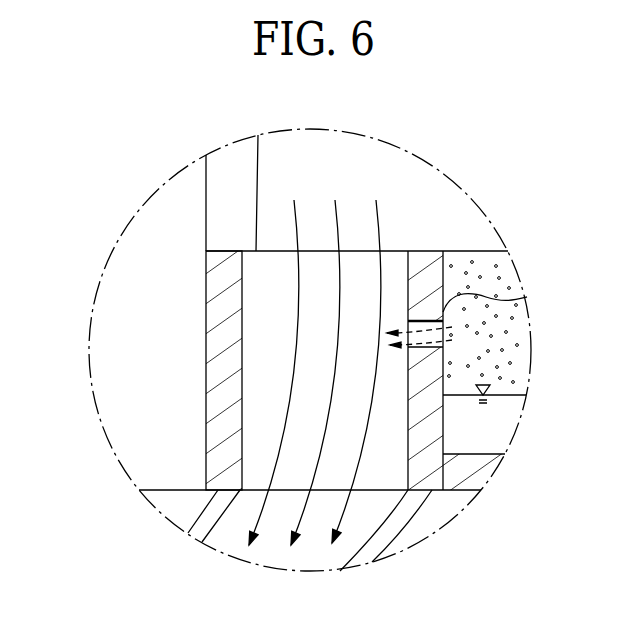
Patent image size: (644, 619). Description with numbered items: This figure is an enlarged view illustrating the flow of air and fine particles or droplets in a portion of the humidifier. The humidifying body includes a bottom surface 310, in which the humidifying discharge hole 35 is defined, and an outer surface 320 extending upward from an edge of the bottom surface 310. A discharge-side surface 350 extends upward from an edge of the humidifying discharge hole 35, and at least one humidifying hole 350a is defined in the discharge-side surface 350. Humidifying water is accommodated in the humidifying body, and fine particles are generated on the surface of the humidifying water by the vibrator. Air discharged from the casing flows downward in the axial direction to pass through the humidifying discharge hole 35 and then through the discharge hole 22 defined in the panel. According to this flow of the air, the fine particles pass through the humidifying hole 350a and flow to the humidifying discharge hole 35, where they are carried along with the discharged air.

The discharge hole 22 is at (288, 514).
The humidifying discharge hole 35 is at (274, 370).
The bottom surface 310 is at (470, 478).
The outer surface 320 is at (212, 311).
The discharge-side surface 350 is at (427, 257).
The humidifying hole 350a is at (527, 297).